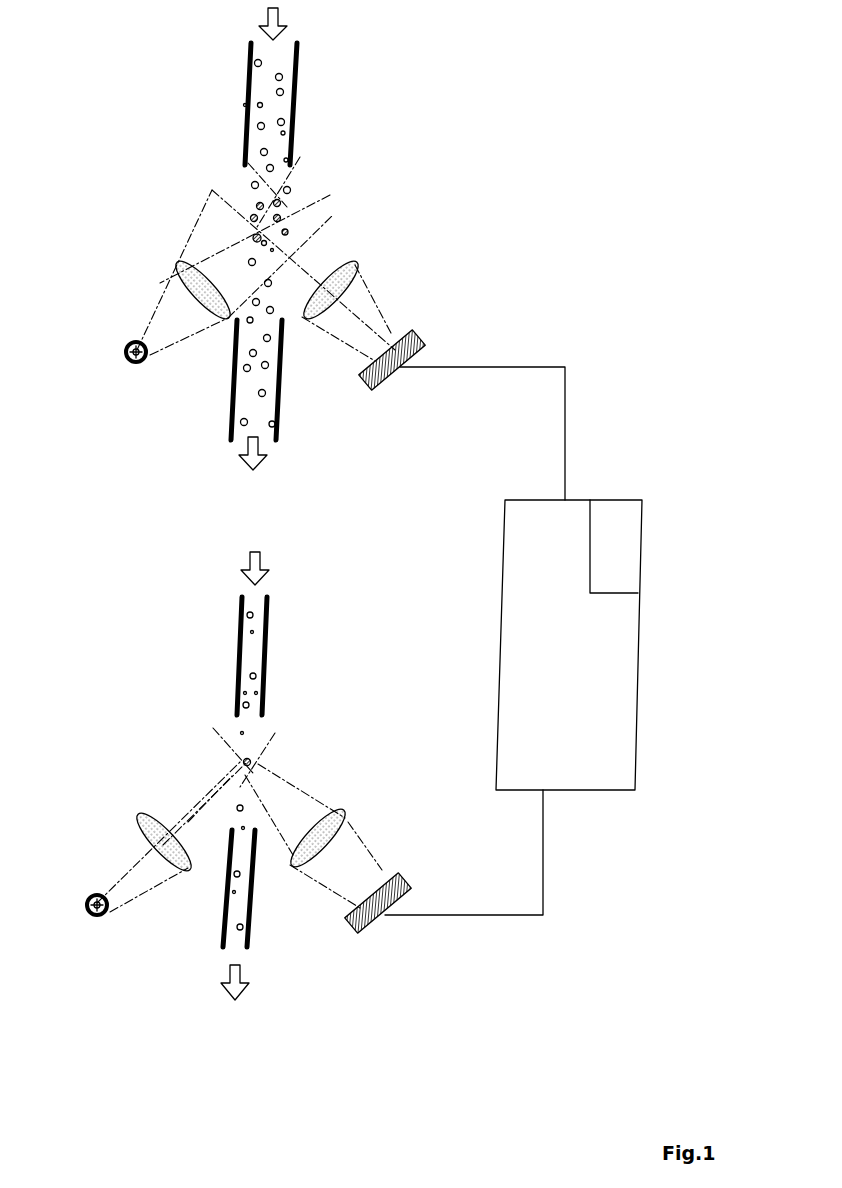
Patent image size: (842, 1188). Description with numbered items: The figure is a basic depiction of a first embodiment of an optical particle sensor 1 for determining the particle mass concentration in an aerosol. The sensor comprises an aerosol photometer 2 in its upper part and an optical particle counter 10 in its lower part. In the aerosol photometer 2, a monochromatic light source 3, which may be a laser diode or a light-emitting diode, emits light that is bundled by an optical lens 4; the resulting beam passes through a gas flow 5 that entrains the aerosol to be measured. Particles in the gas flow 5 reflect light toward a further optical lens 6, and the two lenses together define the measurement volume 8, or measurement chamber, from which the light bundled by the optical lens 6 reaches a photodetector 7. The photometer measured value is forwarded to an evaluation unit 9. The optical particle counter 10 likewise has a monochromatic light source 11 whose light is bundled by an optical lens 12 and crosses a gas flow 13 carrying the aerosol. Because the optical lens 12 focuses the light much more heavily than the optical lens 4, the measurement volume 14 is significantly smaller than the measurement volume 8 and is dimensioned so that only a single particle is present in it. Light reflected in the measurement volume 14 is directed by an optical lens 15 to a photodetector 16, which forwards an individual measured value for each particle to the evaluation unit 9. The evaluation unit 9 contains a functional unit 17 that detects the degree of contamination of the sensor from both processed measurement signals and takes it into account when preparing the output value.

The optical particle sensor 1 is at (622, 280).
The aerosol photometer 2 is at (392, 178).
The monochromatic light source 3 is at (137, 364).
The optical lens 4 is at (195, 270).
The gas flow 5 is at (272, 118).
The further optical lens 6 is at (330, 302).
The photodetector 7 is at (400, 340).
The measurement volume 8 is at (290, 235).
The evaluation unit 9 is at (640, 650).
The optical particle counter 10 is at (182, 913).
The monochromatic light source 11 is at (98, 916).
The optical lens 12 is at (165, 820).
The gas flow 13 is at (252, 657).
The measurement volume 14 is at (252, 762).
The optical lens 15 is at (327, 815).
The photodetector 16 is at (410, 885).
The functional unit 17 is at (620, 540).